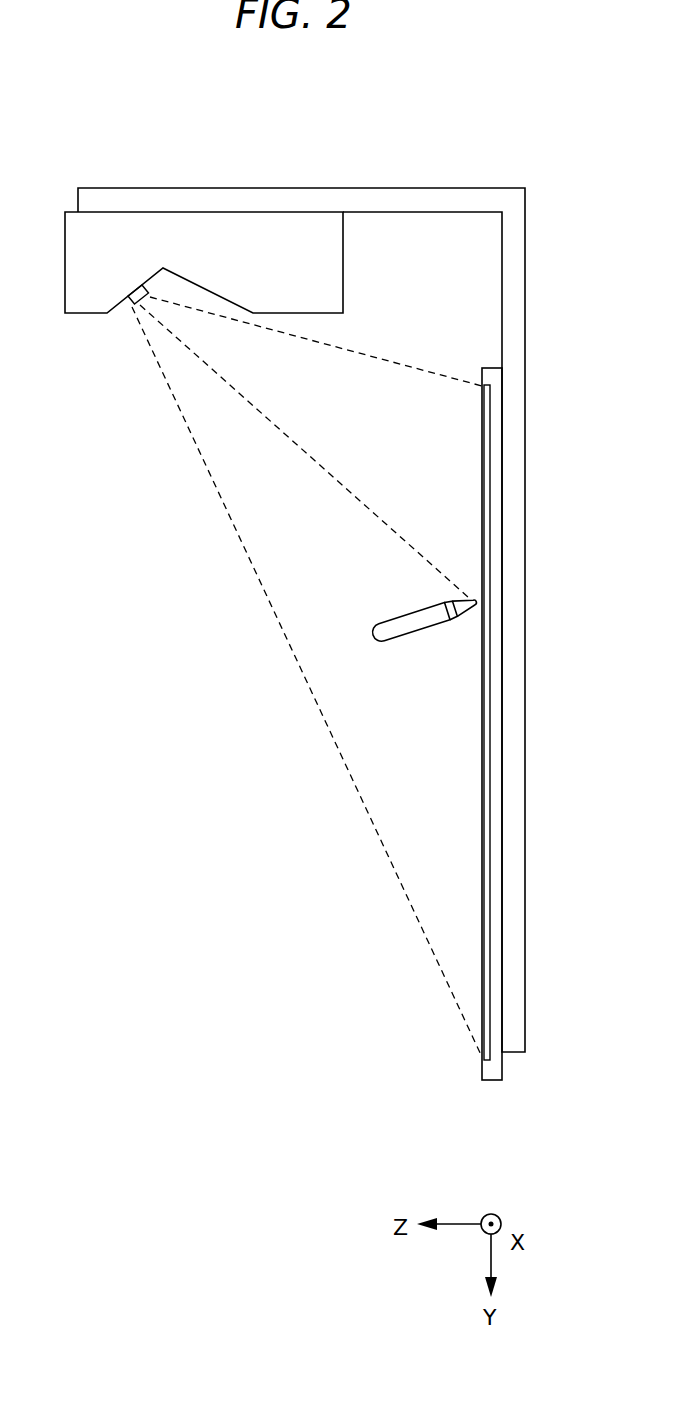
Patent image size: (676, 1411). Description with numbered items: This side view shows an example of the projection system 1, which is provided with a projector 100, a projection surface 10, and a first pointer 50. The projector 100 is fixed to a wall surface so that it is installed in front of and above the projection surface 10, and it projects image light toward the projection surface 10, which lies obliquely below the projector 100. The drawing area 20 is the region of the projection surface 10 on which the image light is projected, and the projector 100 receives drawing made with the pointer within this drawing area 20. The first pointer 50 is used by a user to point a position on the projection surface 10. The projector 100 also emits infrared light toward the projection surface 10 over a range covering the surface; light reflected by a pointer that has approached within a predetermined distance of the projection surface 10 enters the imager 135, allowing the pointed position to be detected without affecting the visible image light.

The projection system 1 is at (441, 167).
The projector 100 is at (330, 260).
The imager 135 is at (127, 303).
The projection surface 10 is at (493, 367).
The drawing area 20 is at (484, 435).
The first pointer 50 is at (408, 628).